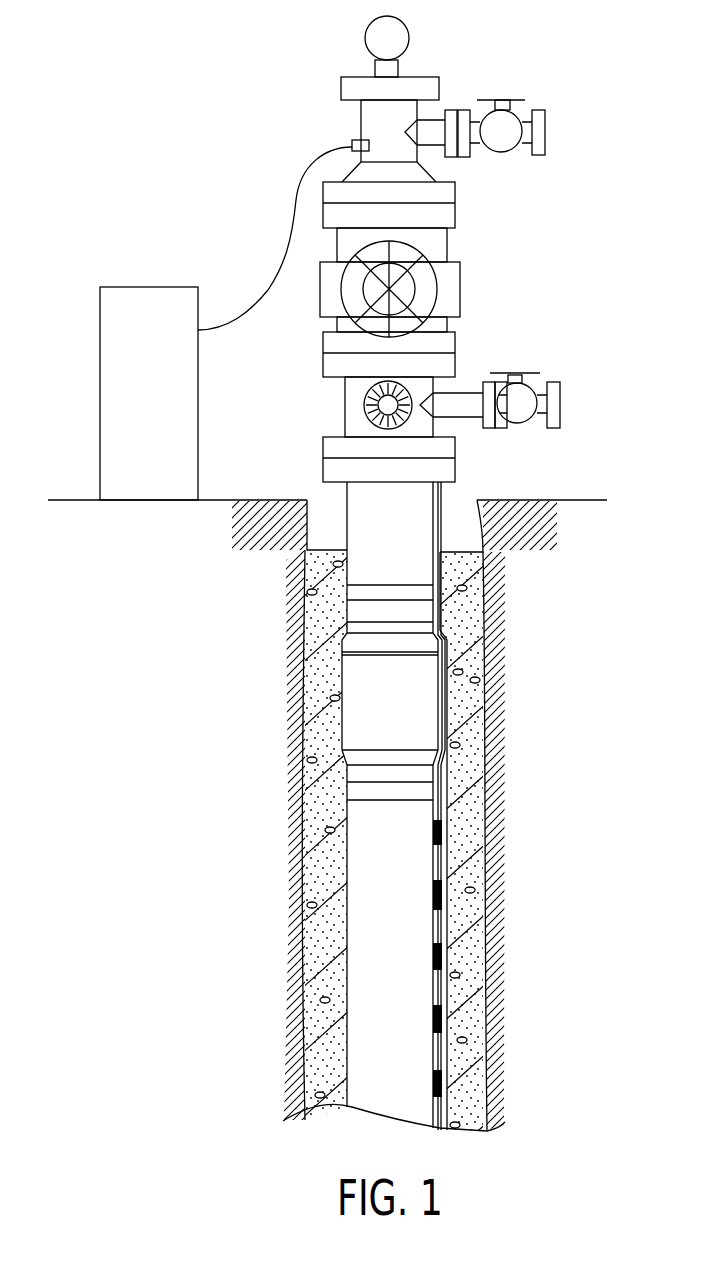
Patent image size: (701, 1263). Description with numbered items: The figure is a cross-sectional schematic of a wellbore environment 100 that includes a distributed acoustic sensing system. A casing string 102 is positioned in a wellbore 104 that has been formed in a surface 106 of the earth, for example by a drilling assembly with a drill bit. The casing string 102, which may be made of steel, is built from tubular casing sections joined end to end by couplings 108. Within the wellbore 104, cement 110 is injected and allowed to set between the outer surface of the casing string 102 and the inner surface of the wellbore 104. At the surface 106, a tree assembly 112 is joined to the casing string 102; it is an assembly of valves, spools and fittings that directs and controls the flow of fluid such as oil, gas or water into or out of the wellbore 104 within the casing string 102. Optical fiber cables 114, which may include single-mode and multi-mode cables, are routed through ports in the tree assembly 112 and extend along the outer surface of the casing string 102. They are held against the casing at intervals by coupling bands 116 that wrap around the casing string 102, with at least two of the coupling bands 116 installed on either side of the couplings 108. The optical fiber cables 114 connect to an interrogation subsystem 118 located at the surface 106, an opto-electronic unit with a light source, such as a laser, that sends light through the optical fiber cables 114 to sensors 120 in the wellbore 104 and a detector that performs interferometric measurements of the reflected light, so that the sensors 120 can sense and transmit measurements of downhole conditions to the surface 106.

The wellbore environment 100 is at (158, 131).
The casing string 102 is at (420, 500).
The wellbore 104 is at (323, 528).
The surface 106 is at (63, 500).
The couplings 108 is at (423, 718).
The cement 110 is at (478, 946).
The tree assembly 112 is at (580, 5).
The optical fiber cables 114 is at (288, 243).
The coupling bands 116 is at (375, 585).
The interrogation subsystem 118 is at (100, 422).
The sensors 120 is at (433, 953).